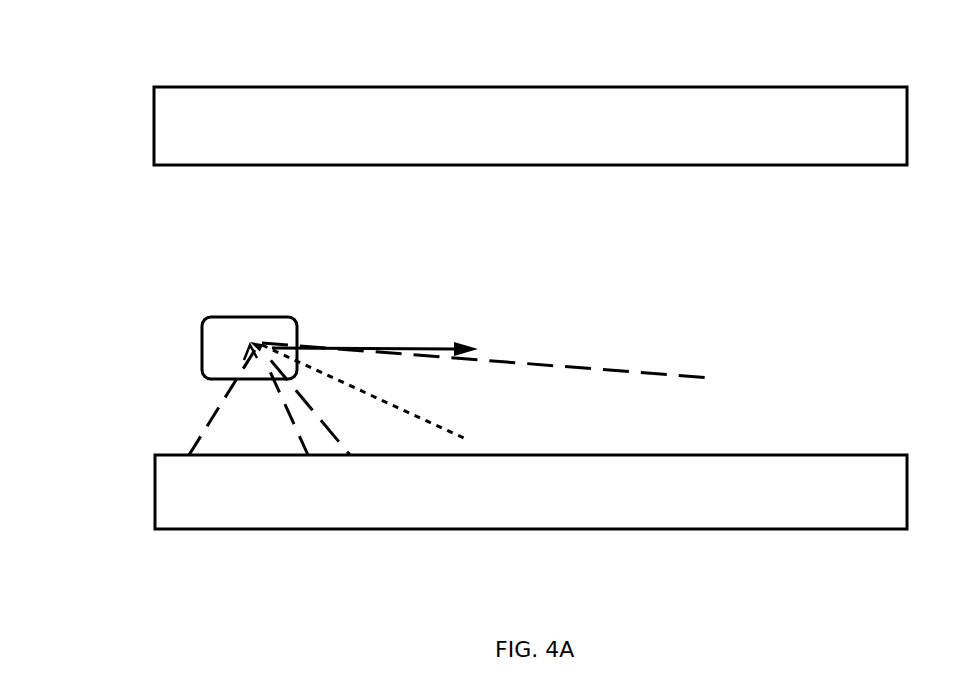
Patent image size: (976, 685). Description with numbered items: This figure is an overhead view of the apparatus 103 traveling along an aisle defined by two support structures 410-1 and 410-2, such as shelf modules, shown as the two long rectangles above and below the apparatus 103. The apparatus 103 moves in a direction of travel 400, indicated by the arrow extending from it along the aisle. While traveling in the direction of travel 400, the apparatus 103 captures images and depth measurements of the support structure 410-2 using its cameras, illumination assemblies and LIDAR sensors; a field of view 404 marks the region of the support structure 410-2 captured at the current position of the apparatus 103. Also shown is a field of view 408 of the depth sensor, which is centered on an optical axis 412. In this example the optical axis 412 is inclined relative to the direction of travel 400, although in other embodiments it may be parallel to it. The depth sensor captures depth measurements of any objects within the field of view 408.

The support structure 410-1 is at (226, 87).
The support structure 410-2 is at (155, 493).
The apparatus 103 is at (186, 335).
The direction of travel 400 is at (455, 346).
The field of view 404 is at (203, 427).
The field of view 408 is at (573, 367).
The optical axis 412 is at (440, 425).